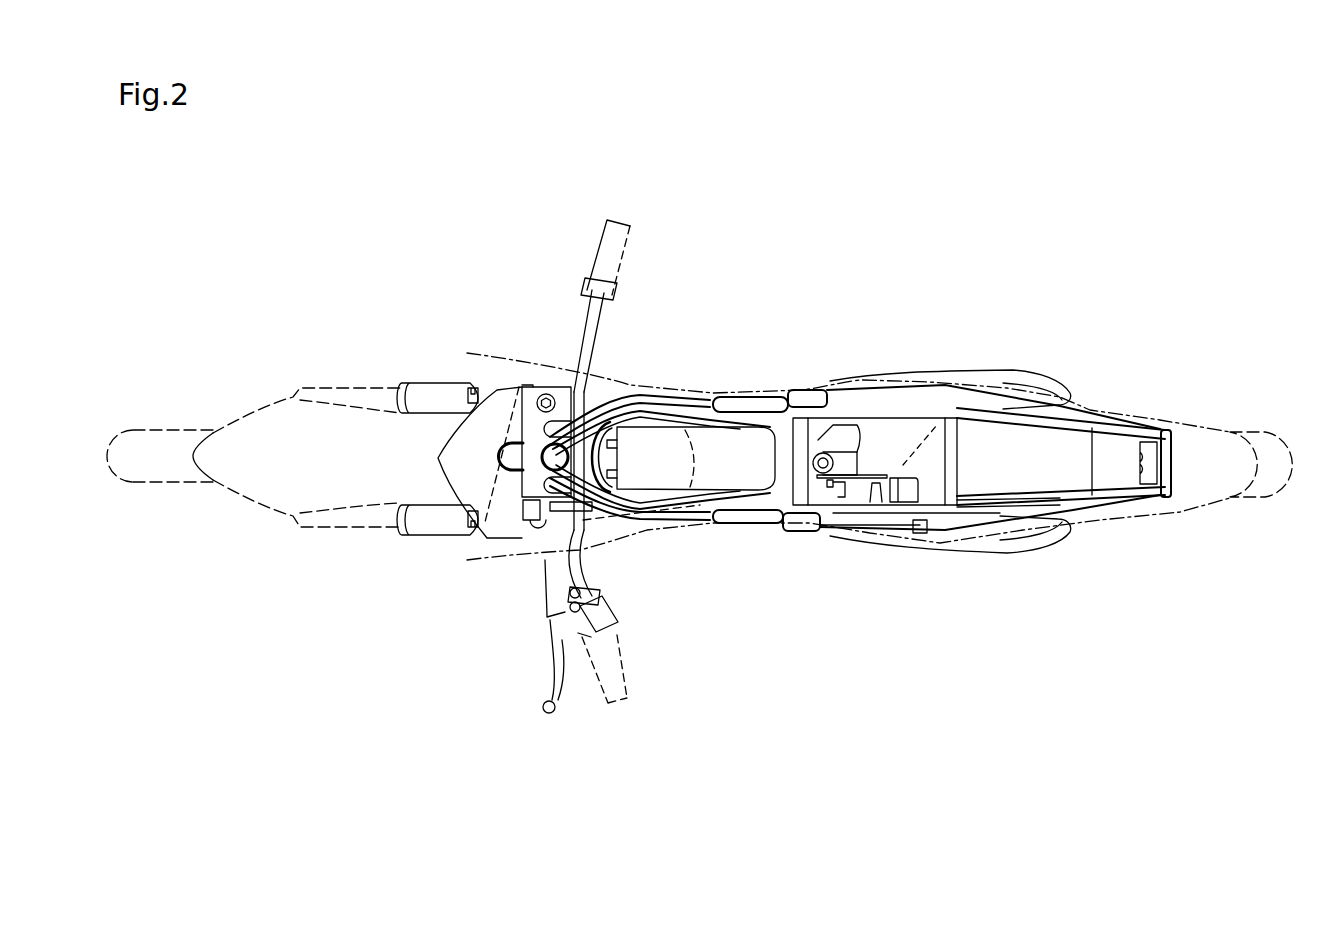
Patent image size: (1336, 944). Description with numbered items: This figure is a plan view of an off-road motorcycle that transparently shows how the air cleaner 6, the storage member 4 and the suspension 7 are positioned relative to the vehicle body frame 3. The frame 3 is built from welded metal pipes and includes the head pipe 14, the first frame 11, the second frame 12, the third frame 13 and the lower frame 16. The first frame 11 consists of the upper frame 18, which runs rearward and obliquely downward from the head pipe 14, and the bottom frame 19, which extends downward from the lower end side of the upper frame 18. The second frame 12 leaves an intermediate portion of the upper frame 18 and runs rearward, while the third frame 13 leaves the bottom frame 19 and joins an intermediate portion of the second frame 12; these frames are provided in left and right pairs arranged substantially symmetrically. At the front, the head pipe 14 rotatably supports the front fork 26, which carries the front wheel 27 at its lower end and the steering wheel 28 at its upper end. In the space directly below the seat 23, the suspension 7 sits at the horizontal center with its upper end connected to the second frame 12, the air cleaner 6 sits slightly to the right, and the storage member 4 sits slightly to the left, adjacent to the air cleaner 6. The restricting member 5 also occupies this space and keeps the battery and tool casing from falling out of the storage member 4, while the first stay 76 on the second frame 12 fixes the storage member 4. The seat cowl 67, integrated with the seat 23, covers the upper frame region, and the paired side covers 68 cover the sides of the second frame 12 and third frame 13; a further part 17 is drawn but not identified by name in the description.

The front wheel 27 is at (138, 430).
The front fork 26 is at (430, 380).
The steering wheel 28 is at (580, 345).
The head pipe 14 is at (512, 468).
The vehicle body frame 3 is at (855, 500).
The first frame 11 is at (855, 550).
The lower frame 16 is at (652, 500).
The upper frame 18 is at (677, 517).
The bottom frame 19 is at (780, 523).
The suspension 7 is at (850, 446).
The air cleaner 6 is at (937, 425).
The storage member 4 is at (920, 493).
The first stay 76 is at (830, 530).
The restricting member 5 is at (875, 530).
The third frame 13 is at (970, 515).
The second frame 12 is at (985, 512).
The seat cowl 67 is at (1003, 385).
The side cover 68 is at (1050, 372).
The seat 23 is at (1100, 455).
The rear wheel 17 is at (1257, 430).